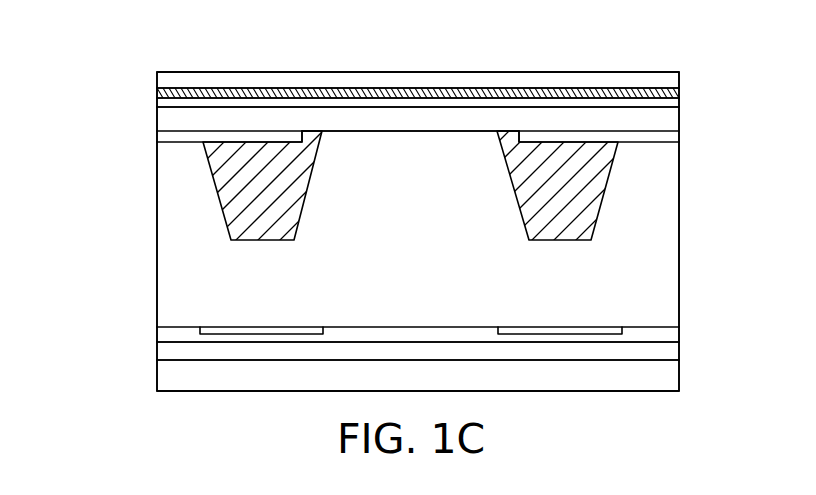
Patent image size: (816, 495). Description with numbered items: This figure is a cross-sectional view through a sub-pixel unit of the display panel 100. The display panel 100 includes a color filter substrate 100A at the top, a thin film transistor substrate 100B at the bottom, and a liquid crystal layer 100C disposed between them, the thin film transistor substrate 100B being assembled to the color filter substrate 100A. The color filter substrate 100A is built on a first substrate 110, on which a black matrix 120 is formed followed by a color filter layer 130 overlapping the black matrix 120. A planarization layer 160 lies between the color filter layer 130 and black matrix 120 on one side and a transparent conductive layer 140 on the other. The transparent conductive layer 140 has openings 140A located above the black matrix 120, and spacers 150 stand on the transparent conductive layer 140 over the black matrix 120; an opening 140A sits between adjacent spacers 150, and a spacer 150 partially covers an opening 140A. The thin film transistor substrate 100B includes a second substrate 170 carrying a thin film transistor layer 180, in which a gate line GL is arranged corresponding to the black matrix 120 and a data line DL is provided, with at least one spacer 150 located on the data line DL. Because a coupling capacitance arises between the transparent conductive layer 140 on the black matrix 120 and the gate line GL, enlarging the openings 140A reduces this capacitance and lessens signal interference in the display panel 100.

The display panel 100 is at (70, 32).
The color filter substrate 100A is at (660, 58).
The thin film transistor substrate 100B is at (652, 402).
The liquid crystal layer 100C is at (668, 262).
The first substrate 110 is at (670, 80).
The black matrix 120 is at (668, 93).
The color filter layer 130 is at (670, 102).
The transparent conductive layer 140 is at (672, 136).
The opening 140A is at (443, 143).
The spacer 150 is at (598, 185).
The planarization layer 160 is at (670, 119).
The second substrate 170 is at (665, 374).
The thin film transistor layer 180 is at (668, 337).
The data line DL is at (224, 330).
The gate line GL is at (668, 351).